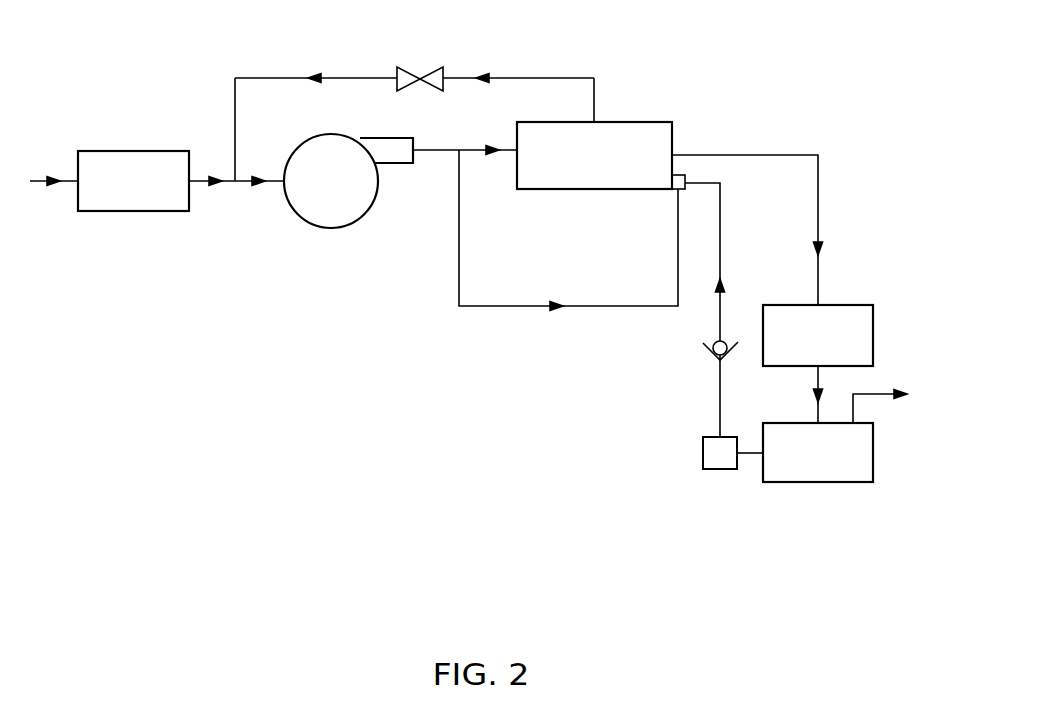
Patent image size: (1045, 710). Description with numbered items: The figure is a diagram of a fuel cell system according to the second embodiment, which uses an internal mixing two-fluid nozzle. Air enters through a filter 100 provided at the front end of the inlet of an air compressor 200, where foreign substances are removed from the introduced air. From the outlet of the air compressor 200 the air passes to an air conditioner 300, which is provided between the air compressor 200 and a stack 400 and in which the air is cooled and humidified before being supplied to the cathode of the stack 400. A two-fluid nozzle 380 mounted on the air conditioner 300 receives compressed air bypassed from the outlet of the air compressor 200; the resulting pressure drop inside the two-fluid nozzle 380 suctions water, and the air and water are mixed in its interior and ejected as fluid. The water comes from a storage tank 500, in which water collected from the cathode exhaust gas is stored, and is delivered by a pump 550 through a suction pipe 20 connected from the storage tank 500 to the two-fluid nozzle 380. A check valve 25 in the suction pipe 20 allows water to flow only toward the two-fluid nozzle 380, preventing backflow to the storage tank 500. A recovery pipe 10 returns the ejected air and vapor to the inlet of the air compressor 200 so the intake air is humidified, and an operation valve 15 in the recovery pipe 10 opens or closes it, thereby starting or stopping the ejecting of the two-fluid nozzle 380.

The recovery pipe 10 is at (510, 78).
The operation valve 15 is at (396, 67).
The suction pipe 20 is at (722, 257).
The check valve 25 is at (712, 352).
The filter 100 is at (169, 151).
The air compressor 200 is at (331, 228).
The air conditioner 300 is at (653, 122).
The two-fluid nozzle 380 is at (685, 175).
The stack 400 is at (873, 333).
The storage tank 500 is at (873, 450).
The pump 550 is at (703, 453).